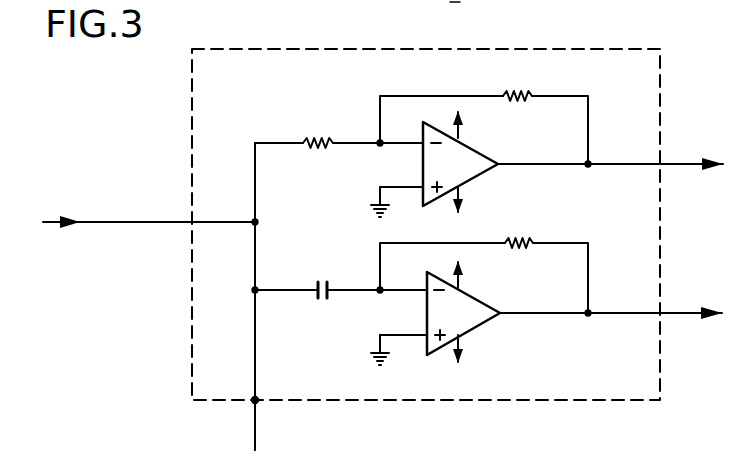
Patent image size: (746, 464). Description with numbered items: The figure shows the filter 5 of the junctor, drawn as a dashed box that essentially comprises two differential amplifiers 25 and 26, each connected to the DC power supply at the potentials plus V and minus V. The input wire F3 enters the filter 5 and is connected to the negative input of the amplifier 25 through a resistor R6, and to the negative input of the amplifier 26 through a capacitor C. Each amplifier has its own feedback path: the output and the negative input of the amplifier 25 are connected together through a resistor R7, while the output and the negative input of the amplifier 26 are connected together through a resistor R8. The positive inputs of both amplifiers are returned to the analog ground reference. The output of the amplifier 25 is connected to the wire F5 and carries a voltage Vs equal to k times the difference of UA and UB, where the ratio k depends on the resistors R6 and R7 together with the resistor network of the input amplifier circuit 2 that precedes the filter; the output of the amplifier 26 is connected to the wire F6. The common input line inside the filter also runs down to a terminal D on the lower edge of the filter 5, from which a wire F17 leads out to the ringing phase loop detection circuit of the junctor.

The input amplifier circuit 2 is at (456, 3).
The filter 5 is at (656, 84).
The differential amplifier 25 is at (423, 155).
The differential amplifier 26 is at (448, 306).
The resistor R6 is at (313, 137).
The resistor R7 is at (520, 93).
The resistor R8 is at (522, 242).
The capacitor C is at (317, 282).
The terminal D is at (256, 400).
The wire F3 is at (150, 222).
The wire F5 is at (672, 162).
The wire F6 is at (672, 311).
The wire F17 is at (257, 428).